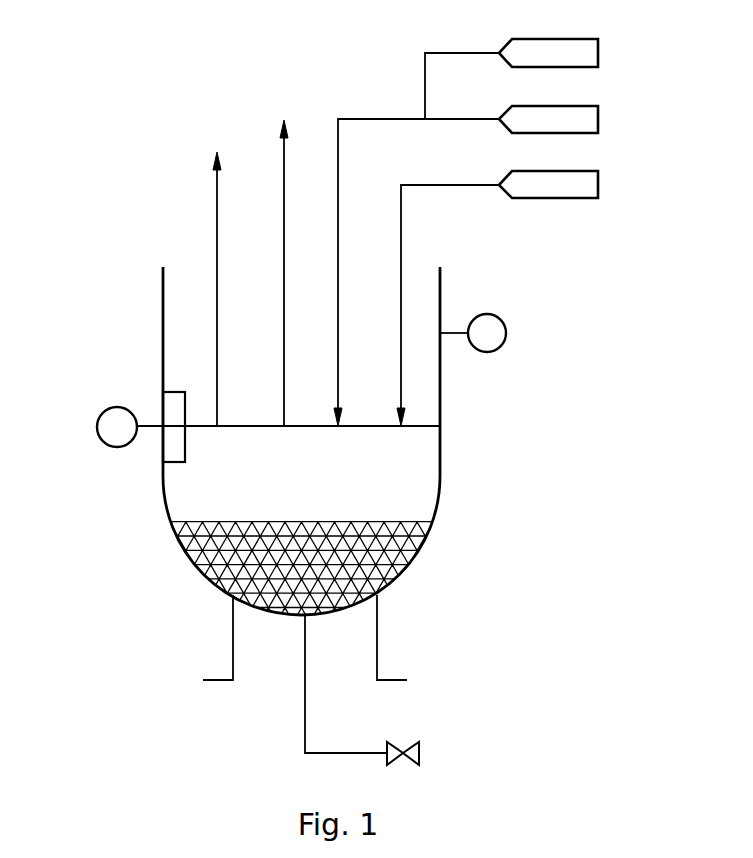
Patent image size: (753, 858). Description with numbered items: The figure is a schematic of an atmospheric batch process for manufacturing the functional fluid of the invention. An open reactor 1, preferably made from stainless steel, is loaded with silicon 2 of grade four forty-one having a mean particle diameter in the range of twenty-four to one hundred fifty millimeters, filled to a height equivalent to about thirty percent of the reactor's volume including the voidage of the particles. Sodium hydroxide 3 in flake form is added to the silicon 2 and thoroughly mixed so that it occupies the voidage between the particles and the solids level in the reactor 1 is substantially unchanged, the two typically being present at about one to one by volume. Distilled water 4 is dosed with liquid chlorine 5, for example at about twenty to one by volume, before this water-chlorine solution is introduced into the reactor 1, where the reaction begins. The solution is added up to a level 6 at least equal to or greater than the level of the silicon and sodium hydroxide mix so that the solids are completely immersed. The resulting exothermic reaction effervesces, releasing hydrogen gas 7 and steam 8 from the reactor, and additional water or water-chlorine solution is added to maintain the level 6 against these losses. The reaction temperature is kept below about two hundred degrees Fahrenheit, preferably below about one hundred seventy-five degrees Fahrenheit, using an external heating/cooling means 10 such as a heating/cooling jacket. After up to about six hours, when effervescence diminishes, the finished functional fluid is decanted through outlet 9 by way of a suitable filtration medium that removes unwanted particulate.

The open reactor 1 is at (162, 374).
The silicon 2 is at (386, 583).
The sodium hydroxide 3 is at (599, 181).
The distilled water 4 is at (599, 114).
The liquid chlorine 5 is at (599, 49).
The level 6 is at (96, 426).
The hydrogen gas 7 is at (215, 201).
The steam 8 is at (282, 157).
The outlet 9 is at (419, 745).
The external heating/cooling means 10 is at (506, 333).